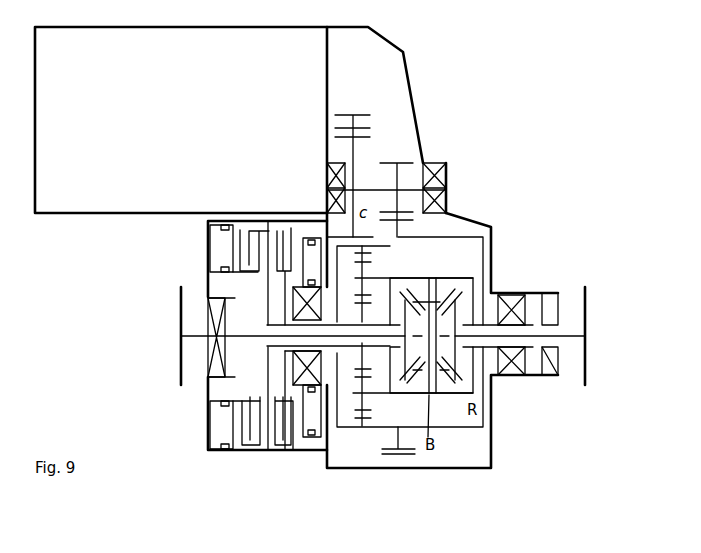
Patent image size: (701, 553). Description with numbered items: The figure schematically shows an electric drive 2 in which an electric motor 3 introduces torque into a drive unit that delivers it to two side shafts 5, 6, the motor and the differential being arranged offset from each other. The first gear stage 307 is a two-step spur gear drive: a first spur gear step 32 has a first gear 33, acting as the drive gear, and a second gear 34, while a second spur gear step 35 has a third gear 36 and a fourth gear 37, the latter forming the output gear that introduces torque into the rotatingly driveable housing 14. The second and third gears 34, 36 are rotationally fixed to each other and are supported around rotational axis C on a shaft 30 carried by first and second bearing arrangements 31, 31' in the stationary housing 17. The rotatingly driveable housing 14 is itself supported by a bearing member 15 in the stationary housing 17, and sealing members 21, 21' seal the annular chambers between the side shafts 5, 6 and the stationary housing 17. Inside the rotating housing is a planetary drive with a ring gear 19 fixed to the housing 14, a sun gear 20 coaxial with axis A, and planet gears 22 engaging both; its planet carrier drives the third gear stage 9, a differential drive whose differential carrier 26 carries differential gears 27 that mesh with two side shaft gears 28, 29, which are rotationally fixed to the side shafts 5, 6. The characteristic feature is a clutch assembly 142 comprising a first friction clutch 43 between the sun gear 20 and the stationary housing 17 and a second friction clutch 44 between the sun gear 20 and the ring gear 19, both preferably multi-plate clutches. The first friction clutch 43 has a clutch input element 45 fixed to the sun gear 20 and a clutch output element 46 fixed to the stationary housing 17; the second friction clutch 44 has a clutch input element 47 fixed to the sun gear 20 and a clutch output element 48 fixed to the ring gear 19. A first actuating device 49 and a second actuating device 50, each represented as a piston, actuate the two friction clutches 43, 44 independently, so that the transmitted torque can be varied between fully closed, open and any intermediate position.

The electric drive 2 is at (541, 65).
The electric motor 3 is at (201, 136).
The first gear stage 307 is at (381, 97).
The first gear 33 is at (347, 113).
The first spur gear step 32 is at (385, 130).
The second gear 34 is at (363, 143).
The third gear 36 is at (402, 163).
The shaft 30 is at (450, 160).
The first bearing arrangement 31 is at (462, 186).
The second bearing arrangement 31' is at (315, 188).
The second spur gear step 35 is at (421, 220).
The stationary housing 17 is at (487, 222).
The rotatingly driveable housing 14 is at (490, 240).
The differential carrier 26 is at (476, 274).
The first bearing member 15 is at (520, 295).
The sealing member 21 is at (566, 315).
The sun gear 20 is at (370, 294).
The side shaft gear 29 is at (403, 298).
The side shaft 6 is at (191, 336).
The clutch output element 48 is at (282, 272).
The clutch output element 46 is at (240, 401).
The sealing member 21' is at (189, 399).
The first actuating device 49 is at (210, 453).
The first friction clutch 43 is at (243, 453).
The clutch input element 45 is at (256, 452).
The clutch assembly 142 is at (266, 471).
The second friction clutch 44 is at (289, 450).
The clutch input element 47 is at (273, 452).
The second actuating device 50 is at (321, 455).
The planet gears 22 is at (364, 402).
The ring gear 19 is at (364, 417).
The fourth gear 37 is at (408, 452).
The differential gears 27 is at (442, 372).
The side shaft gear 28 is at (457, 362).
The third gear stage 9 is at (487, 400).
The side shaft 5 is at (570, 340).